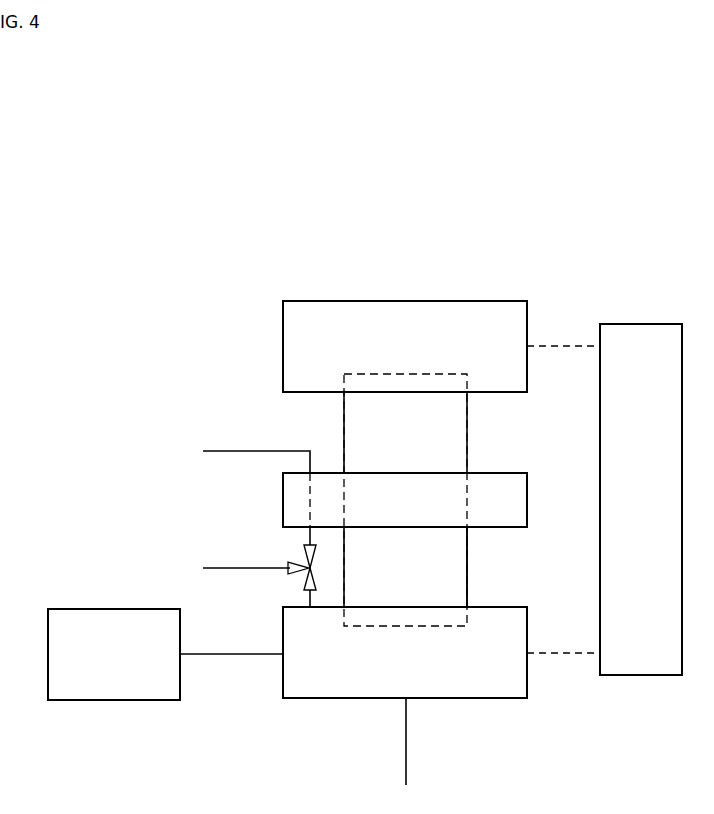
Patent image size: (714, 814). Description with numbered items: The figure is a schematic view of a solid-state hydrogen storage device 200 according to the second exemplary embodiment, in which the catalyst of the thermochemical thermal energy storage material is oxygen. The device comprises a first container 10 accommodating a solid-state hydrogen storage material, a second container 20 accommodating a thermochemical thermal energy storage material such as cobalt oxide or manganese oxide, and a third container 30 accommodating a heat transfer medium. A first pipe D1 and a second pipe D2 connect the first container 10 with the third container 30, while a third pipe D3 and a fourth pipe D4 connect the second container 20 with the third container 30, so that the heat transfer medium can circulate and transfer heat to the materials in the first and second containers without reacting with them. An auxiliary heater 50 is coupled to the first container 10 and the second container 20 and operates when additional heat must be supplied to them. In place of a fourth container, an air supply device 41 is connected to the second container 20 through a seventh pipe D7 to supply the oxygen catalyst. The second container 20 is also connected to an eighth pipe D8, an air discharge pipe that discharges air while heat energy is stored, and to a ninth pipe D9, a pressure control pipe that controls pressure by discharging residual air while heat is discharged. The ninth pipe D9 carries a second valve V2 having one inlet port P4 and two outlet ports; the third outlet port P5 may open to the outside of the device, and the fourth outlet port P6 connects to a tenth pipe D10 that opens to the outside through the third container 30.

The solid-state hydrogen storage device 200 is at (374, 145).
The first container 10 is at (395, 301).
The second container 20 is at (448, 698).
The third container 30 is at (527, 500).
The air supply device 41 is at (113, 700).
The auxiliary heater 50 is at (640, 324).
The first pipe D1 is at (467, 452).
The second pipe D2 is at (344, 433).
The third pipe D3 is at (344, 565).
The fourth pipe D4 is at (467, 548).
The seventh pipe D7 is at (225, 654).
The eighth pipe D8 is at (405, 744).
The ninth pipe D9 is at (308, 598).
The tenth pipe D10 is at (236, 451).
The inlet port P4 is at (305, 584).
The third outlet port P5 is at (303, 558).
The fourth outlet port P6 is at (302, 546).
The second valve V2 is at (321, 567).